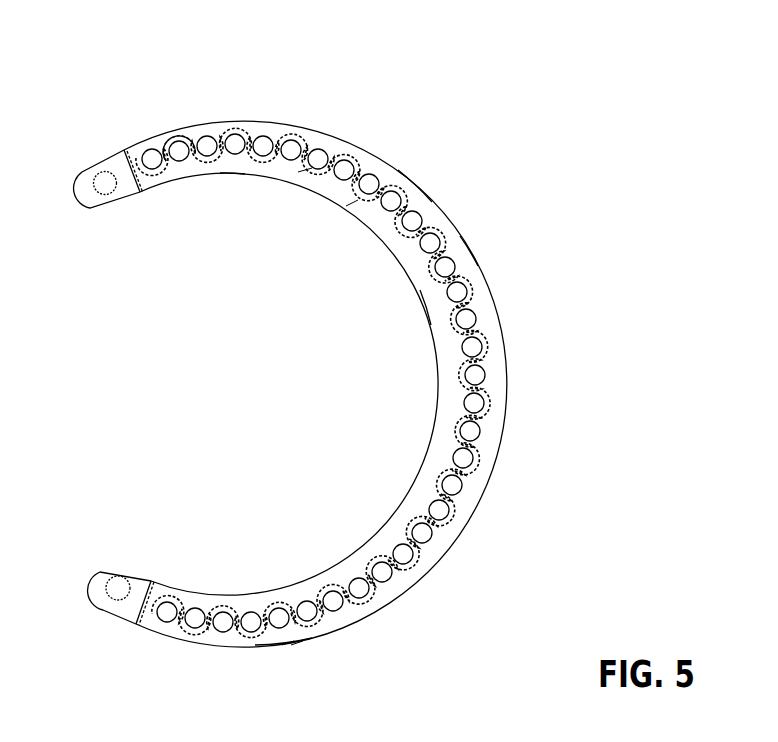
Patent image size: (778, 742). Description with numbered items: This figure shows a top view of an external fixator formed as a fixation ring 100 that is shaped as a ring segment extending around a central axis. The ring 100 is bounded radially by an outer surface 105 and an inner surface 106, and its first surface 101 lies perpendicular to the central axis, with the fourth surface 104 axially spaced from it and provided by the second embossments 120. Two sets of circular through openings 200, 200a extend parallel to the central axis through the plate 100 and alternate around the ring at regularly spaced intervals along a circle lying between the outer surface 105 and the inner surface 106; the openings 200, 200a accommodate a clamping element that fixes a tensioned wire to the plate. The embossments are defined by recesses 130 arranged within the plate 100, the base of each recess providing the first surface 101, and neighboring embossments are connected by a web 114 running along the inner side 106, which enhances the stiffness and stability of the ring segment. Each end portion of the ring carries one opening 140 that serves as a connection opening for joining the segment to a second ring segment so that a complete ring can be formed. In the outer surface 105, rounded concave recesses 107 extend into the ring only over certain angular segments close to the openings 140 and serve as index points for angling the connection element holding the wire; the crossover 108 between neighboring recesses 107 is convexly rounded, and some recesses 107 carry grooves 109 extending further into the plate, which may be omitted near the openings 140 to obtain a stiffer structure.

The fixation ring 100 is at (497, 438).
The first surface 101 is at (265, 132).
The fourth surface 104 is at (230, 168).
The outer surface 105 is at (467, 250).
The inner surface 106 is at (424, 304).
The recesses 107 is at (300, 637).
The crossover 108 is at (297, 643).
The grooves 109 is at (288, 642).
The web 114 is at (305, 170).
The second embossments 120 is at (229, 131).
The recesses 130 is at (420, 198).
The opening 140 is at (100, 185).
The first set of through openings 200 is at (147, 160).
The second set of through openings 200a is at (182, 165).